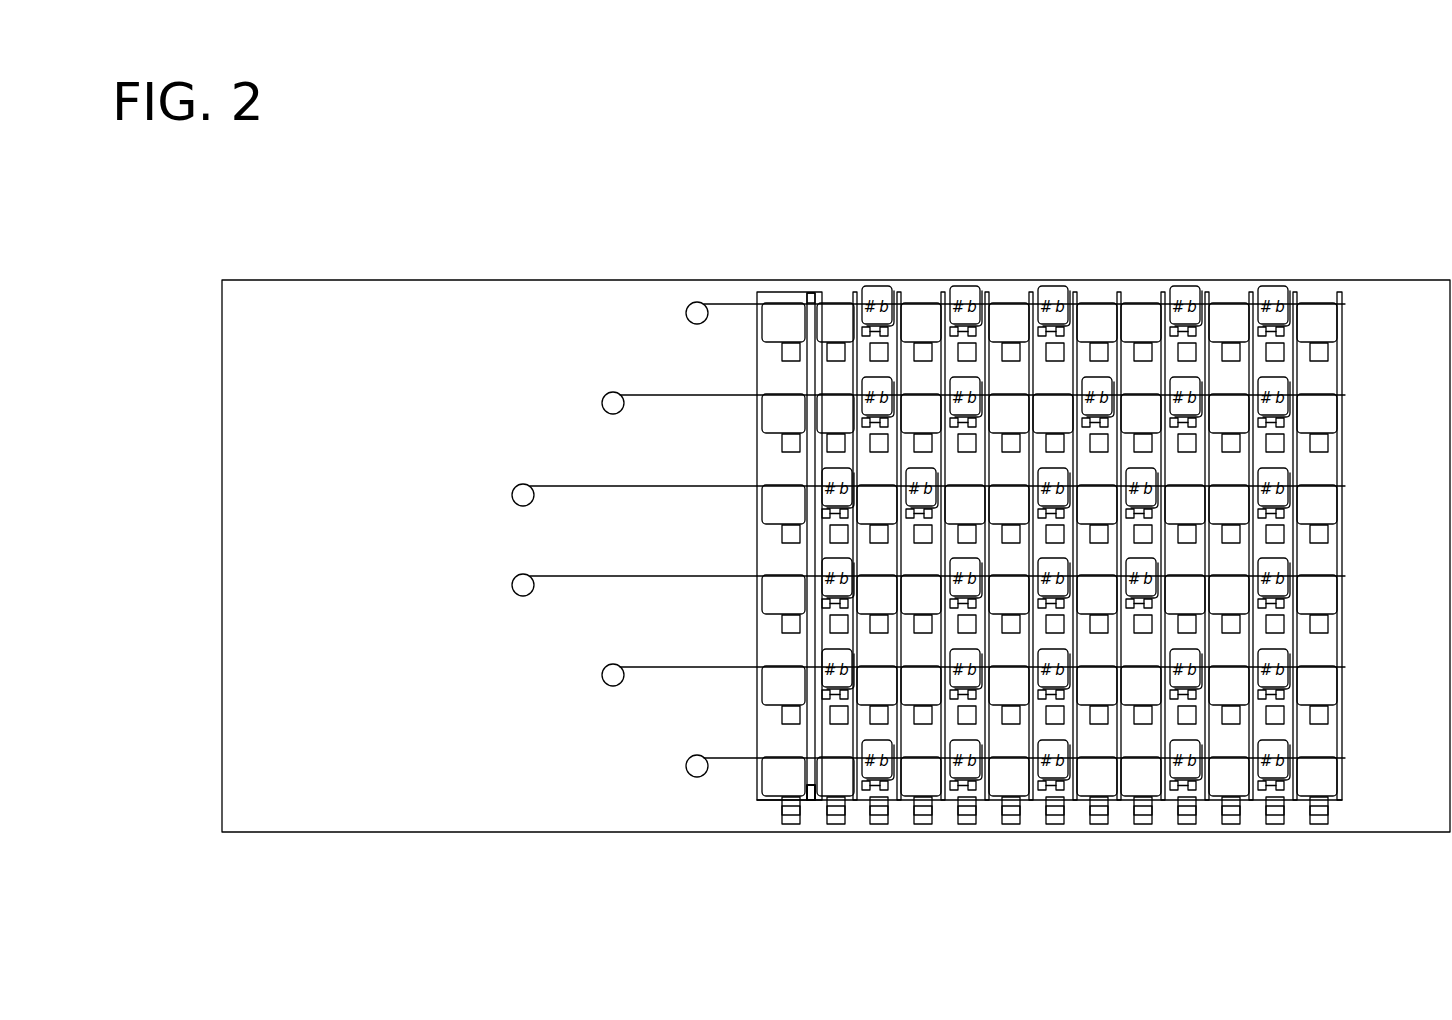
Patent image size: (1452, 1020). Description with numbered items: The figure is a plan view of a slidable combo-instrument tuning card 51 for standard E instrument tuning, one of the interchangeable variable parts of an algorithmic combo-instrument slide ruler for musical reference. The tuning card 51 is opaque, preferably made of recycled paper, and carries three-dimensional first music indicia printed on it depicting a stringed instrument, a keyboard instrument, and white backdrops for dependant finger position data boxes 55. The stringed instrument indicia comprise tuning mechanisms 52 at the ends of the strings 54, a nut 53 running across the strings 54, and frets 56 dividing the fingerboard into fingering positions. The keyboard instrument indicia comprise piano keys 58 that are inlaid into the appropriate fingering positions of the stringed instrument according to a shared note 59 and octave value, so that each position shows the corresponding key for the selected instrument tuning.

The slidable combo-instrument tuning card 51 is at (1409, 551).
The tuning mechanisms 52 is at (601, 403).
The nut 53 is at (810, 293).
The strings 54 is at (663, 393).
The dependant finger position data boxes 55 is at (1098, 826).
The frets 56 is at (1252, 293).
The piano keys 58 is at (1053, 295).
The shared note 59 is at (923, 308).